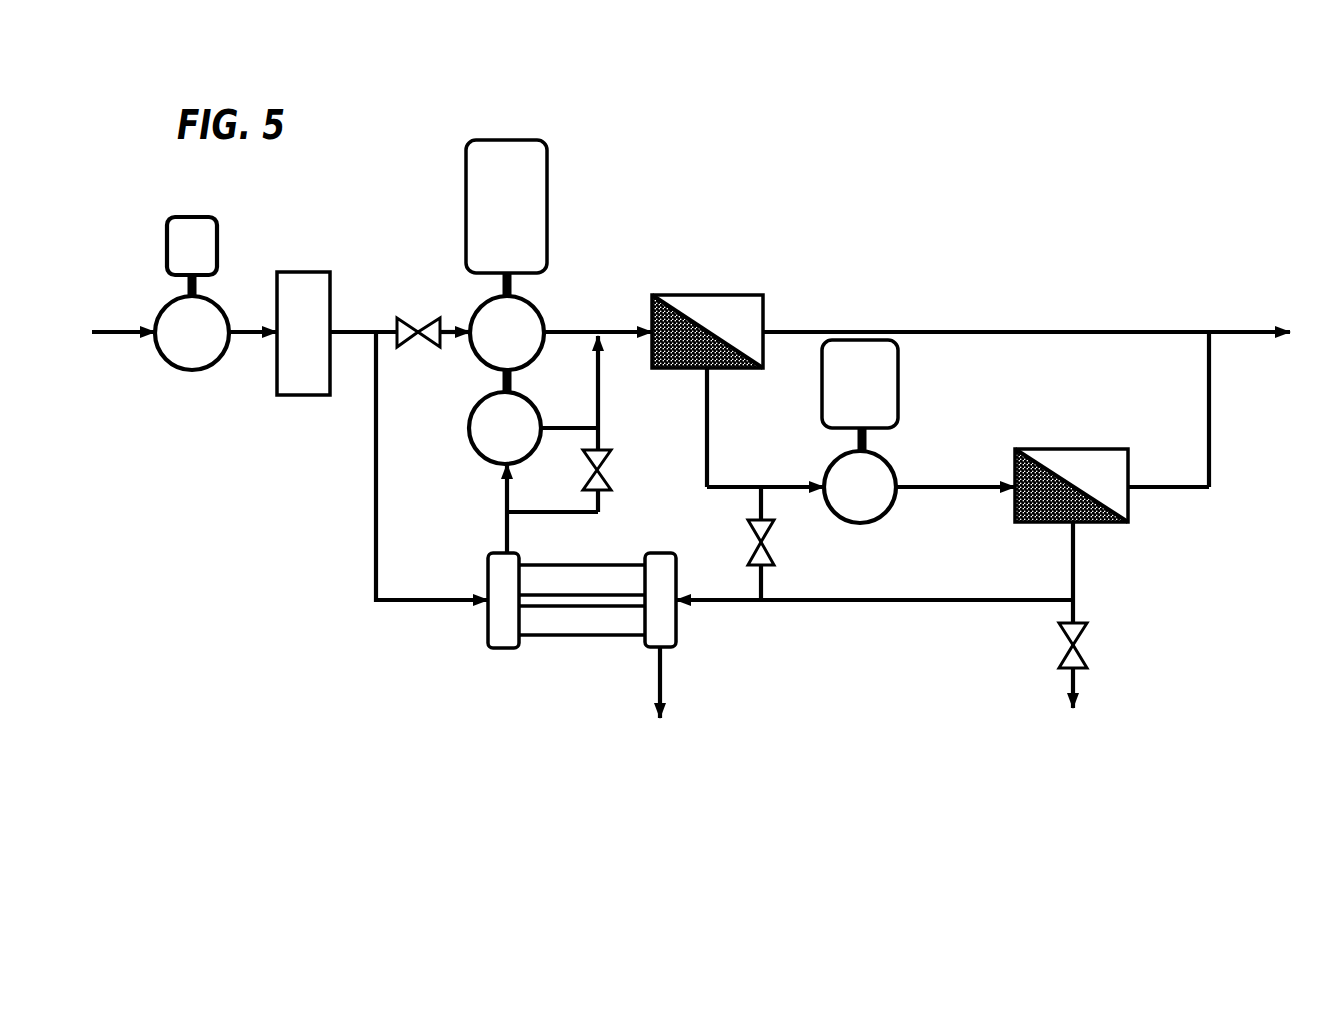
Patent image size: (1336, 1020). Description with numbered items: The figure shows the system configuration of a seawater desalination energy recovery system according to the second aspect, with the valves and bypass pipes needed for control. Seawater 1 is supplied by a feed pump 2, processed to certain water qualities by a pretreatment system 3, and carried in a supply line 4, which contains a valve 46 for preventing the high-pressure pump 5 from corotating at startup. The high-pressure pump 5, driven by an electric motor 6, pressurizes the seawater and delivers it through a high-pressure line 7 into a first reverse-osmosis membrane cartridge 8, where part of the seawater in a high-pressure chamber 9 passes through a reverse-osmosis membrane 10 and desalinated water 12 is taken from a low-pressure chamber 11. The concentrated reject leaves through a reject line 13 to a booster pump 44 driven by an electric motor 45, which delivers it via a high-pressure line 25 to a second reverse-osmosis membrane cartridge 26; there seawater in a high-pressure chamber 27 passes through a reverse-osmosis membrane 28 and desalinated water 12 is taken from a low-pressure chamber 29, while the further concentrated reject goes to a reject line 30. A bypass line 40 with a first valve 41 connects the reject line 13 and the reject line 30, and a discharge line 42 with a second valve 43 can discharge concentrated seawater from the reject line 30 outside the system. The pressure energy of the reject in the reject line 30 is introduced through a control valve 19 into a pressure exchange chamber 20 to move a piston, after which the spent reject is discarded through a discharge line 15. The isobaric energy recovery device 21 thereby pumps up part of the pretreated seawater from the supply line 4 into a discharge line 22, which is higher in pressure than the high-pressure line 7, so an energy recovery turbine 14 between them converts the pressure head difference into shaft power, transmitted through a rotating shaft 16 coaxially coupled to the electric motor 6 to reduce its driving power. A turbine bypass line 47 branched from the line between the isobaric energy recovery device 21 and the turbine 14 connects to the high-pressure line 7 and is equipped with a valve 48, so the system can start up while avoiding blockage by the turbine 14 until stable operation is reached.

The seawater 1 is at (122, 338).
The feed pump 2 is at (191, 370).
The pretreatment system 3 is at (292, 397).
The supply line 4 is at (345, 328).
The valve 46 is at (408, 317).
The high-pressure pump 5 is at (527, 313).
The electric motor 6 is at (541, 222).
The rotating shaft 16 is at (515, 378).
The energy recovery turbine 14 is at (518, 447).
The high-pressure line 7 is at (614, 335).
The valve 48 is at (613, 460).
The turbine bypass line 47 is at (597, 513).
The discharge line 22 is at (500, 535).
The control valve 19 is at (599, 603).
The pressure exchange chamber 20 is at (597, 618).
The isobaric energy recovery device 21 is at (553, 637).
The discharge line 15 is at (659, 702).
The first reverse-osmosis membrane cartridge 8 is at (738, 331).
The high-pressure chamber 9 is at (730, 368).
The reverse-osmosis membrane 10 is at (742, 348).
The low-pressure chamber 11 is at (752, 320).
The desalinated water 12 is at (1039, 391).
The reject line 13 is at (710, 432).
The bypass line 40 is at (763, 508).
The first valve 41 is at (763, 560).
The booster pump 44 is at (873, 465).
The electric motor 45 is at (885, 398).
The high-pressure line 25 is at (925, 489).
The second reverse-osmosis membrane cartridge 26 is at (1101, 480).
The high-pressure chamber 27 is at (1090, 523).
The reverse-osmosis membrane 28 is at (1105, 498).
The low-pressure chamber 29 is at (1110, 472).
The reject line 30 is at (953, 601).
The discharge line 42 is at (1087, 622).
The second valve 43 is at (1087, 668).